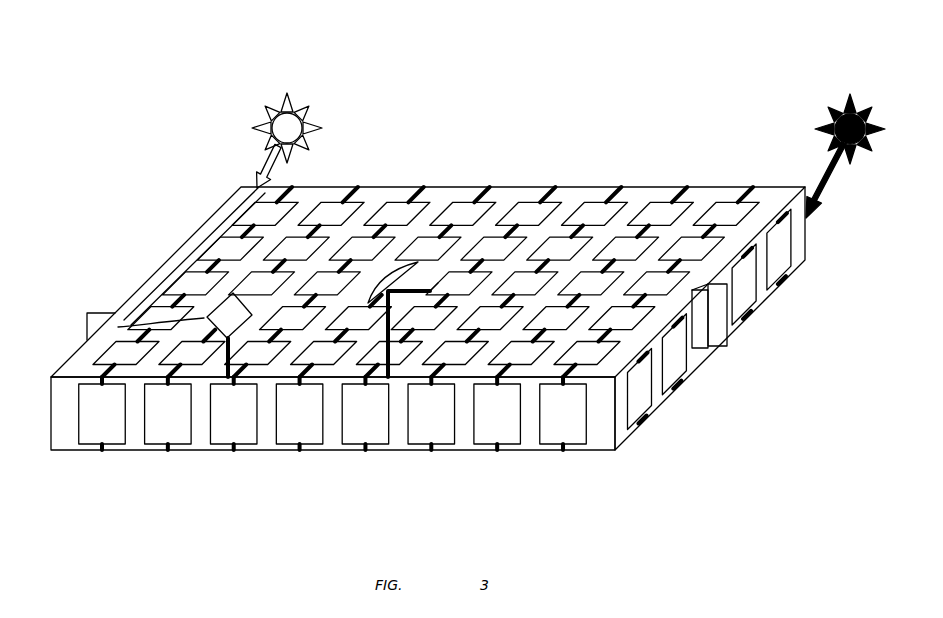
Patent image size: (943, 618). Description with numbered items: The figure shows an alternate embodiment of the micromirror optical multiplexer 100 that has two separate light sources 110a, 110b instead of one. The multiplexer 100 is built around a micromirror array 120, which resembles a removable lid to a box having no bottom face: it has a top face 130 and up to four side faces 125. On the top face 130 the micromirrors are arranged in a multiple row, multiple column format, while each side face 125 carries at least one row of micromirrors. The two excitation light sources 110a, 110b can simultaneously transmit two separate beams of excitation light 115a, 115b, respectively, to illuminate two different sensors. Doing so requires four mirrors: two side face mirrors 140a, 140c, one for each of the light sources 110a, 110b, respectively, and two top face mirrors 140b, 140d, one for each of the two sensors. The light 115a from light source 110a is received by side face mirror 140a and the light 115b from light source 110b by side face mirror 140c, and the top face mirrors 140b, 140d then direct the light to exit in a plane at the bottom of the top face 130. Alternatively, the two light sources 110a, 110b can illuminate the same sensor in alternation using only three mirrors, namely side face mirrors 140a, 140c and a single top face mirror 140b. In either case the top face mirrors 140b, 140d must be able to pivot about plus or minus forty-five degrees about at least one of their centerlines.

The micromirror optical multiplexer 100 is at (247, 461).
The light source 110a is at (848, 99).
The light source 110b is at (308, 109).
The excitation light 115a is at (829, 181).
The excitation light 115b is at (262, 171).
The micromirror array 120 is at (140, 288).
The side face 125 is at (697, 360).
The top face 130 is at (580, 192).
The side face mirror 140a is at (719, 340).
The top face mirror 140b is at (398, 278).
The side face mirror 140c is at (91, 318).
The top face mirror 140d is at (205, 316).